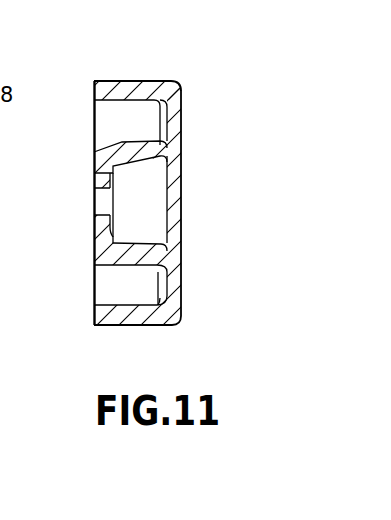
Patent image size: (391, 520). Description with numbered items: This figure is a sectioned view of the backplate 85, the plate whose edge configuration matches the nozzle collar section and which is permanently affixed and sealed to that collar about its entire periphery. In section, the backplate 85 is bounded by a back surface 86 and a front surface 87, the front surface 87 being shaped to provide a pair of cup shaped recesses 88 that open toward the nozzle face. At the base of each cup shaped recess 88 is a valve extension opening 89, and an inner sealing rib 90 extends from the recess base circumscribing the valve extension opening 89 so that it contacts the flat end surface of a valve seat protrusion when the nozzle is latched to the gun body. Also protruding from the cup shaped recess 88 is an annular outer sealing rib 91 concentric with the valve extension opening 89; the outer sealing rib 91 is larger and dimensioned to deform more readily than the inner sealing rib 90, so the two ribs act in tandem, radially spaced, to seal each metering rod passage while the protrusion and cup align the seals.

The backplate 85 is at (105, 92).
The back surface 86 is at (177, 110).
The front surface 87 is at (93, 170).
The cup shaped recess 88 is at (160, 245).
The valve extension opening 89 is at (90, 220).
The inner sealing rib 90 is at (118, 175).
The outer sealing rib 91 is at (110, 245).